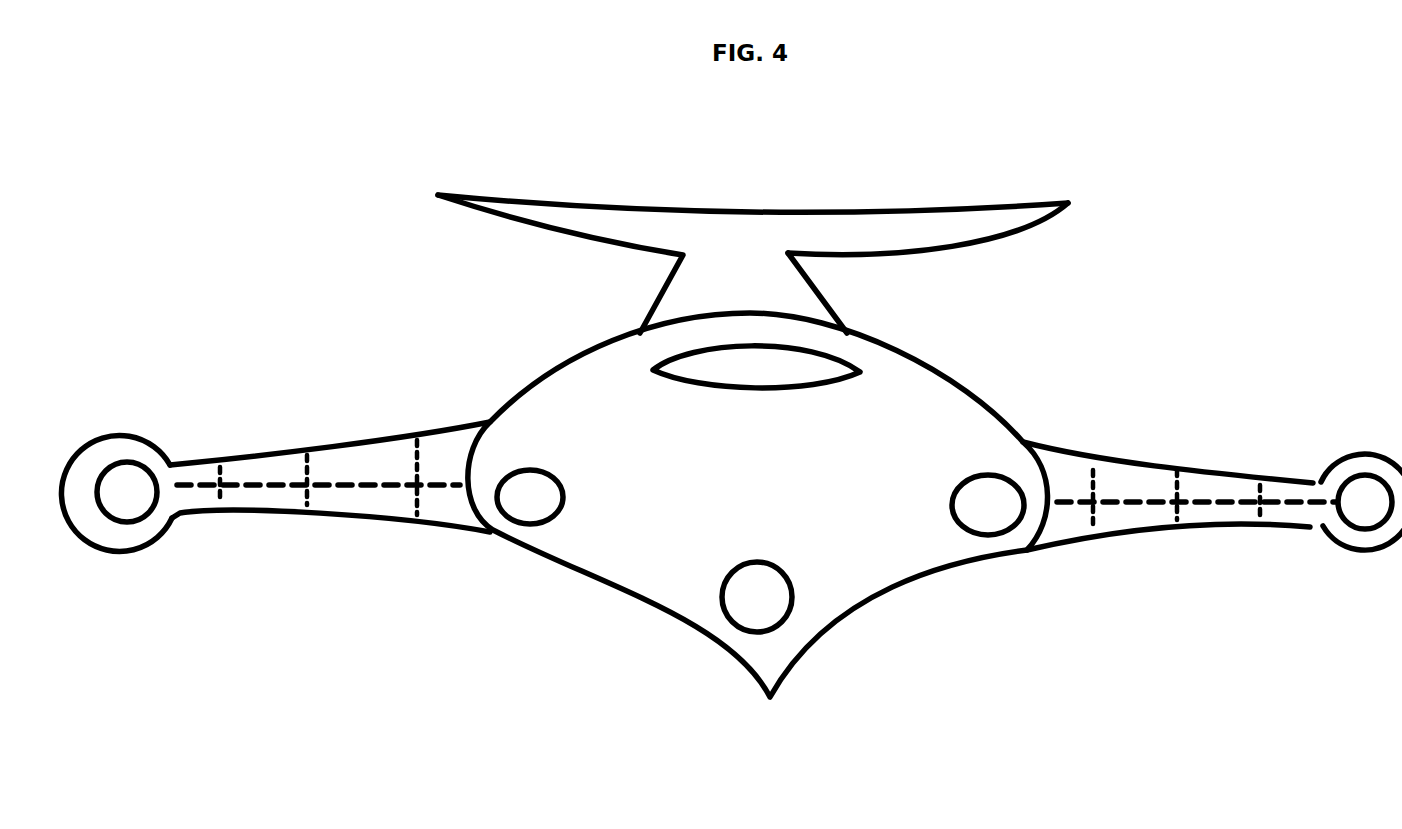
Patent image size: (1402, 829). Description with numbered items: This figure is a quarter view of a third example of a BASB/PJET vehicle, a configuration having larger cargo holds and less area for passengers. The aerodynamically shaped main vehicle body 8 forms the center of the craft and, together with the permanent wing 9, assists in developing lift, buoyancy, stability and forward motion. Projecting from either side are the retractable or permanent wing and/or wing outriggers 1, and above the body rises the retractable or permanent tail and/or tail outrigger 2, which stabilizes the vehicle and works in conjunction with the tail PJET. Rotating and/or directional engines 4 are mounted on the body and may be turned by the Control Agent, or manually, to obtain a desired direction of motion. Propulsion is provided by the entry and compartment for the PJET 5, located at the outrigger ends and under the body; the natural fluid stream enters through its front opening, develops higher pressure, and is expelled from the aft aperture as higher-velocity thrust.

The retractable or permanent wing and/or wing outrigger 1 is at (337, 457).
The retractable or permanent tail and/or tail outrigger 2 is at (730, 254).
The rotating and/or directional engines 4 is at (536, 501).
The entry and compartment for PJET 5 is at (131, 475).
The main vehicle body 8 is at (730, 367).
The permanent wing 9 is at (888, 437).